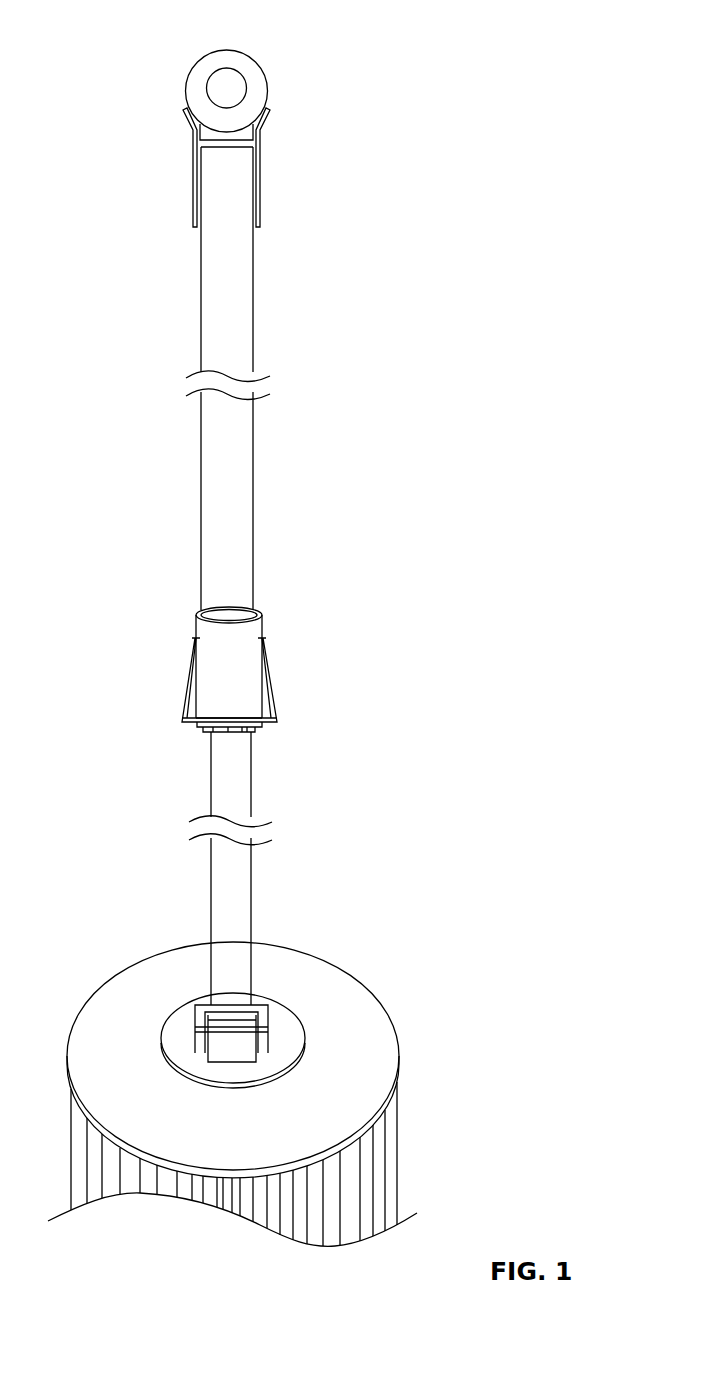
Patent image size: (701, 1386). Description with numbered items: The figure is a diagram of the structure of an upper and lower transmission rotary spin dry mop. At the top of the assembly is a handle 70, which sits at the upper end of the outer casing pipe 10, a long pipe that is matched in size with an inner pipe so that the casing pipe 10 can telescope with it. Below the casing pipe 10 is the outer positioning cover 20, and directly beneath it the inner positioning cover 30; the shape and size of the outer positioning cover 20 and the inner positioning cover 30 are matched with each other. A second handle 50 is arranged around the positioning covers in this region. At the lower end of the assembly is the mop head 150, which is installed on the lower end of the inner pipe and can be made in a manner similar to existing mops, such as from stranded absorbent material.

The outer casing pipe 10 is at (237, 283).
The outer positioning cover 20 is at (240, 637).
The inner positioning cover 30 is at (237, 730).
The handle 50 is at (275, 698).
The handle 70 is at (235, 123).
The mop head 150 is at (332, 983).